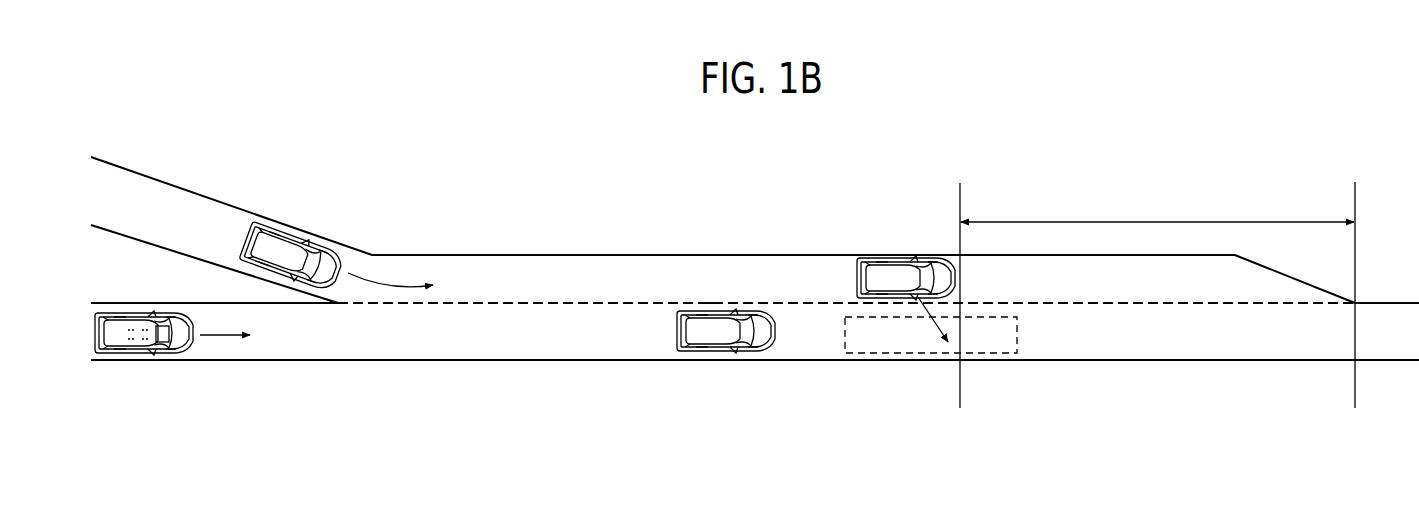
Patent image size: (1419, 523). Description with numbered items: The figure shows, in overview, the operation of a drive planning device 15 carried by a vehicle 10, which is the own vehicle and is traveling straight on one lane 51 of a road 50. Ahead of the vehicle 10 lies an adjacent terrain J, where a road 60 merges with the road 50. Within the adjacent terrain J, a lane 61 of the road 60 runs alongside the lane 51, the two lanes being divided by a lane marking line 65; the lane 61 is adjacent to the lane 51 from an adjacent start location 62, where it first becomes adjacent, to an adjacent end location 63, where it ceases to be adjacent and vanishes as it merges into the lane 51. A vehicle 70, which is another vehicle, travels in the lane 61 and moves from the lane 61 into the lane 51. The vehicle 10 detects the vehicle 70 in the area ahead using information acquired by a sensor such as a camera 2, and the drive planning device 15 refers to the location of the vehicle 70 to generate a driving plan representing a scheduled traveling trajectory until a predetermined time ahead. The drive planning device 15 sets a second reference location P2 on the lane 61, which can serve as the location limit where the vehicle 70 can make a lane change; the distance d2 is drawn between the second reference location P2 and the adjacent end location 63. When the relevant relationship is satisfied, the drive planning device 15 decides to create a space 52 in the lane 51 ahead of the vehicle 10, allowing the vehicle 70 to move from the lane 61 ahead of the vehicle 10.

The vehicle 10 is at (130, 325).
The camera 2 is at (165, 330).
The drive planning device 15 is at (125, 352).
The vehicle 70 is at (282, 253).
The road 50 is at (345, 362).
The lane 51 is at (513, 353).
The space 52 is at (1000, 355).
The road 60 is at (548, 252).
The lane 61 is at (513, 299).
The adjacent start location 62 is at (339, 304).
The adjacent end location 63 is at (1357, 303).
The lane marking line 65 is at (562, 305).
The adjacent terrain J is at (460, 213).
The second reference location P2 is at (961, 283).
The distance d2 is at (1157, 210).